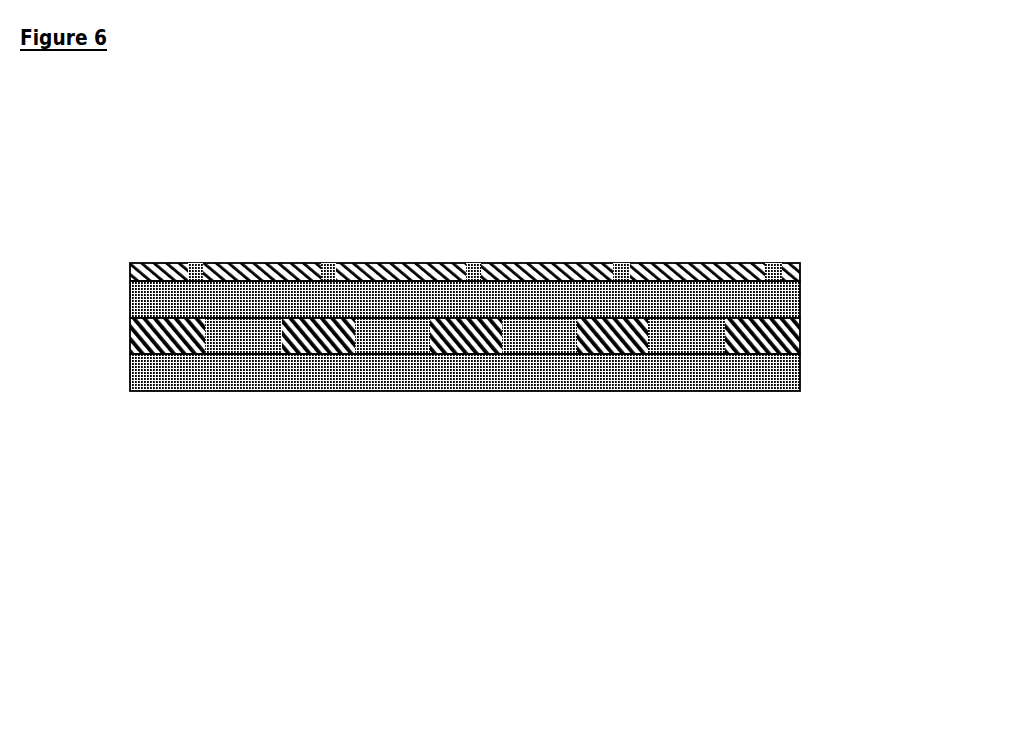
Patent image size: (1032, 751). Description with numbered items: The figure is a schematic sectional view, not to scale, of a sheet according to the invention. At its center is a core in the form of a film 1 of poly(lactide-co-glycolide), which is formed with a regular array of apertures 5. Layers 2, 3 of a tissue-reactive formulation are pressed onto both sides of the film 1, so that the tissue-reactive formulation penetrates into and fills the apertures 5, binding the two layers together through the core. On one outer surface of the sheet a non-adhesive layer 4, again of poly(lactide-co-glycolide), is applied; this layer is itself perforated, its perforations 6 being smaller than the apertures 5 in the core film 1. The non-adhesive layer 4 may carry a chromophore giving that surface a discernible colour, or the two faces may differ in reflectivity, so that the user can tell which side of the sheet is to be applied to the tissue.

The film 1 is at (528, 444).
The layer of tissue-reactive formulation 2 is at (463, 370).
The layer of tissue-reactive formulation 3 is at (222, 298).
The non-adhesive layer 4 is at (800, 280).
The apertures 5 is at (465, 444).
The perforations 6 is at (485, 240).